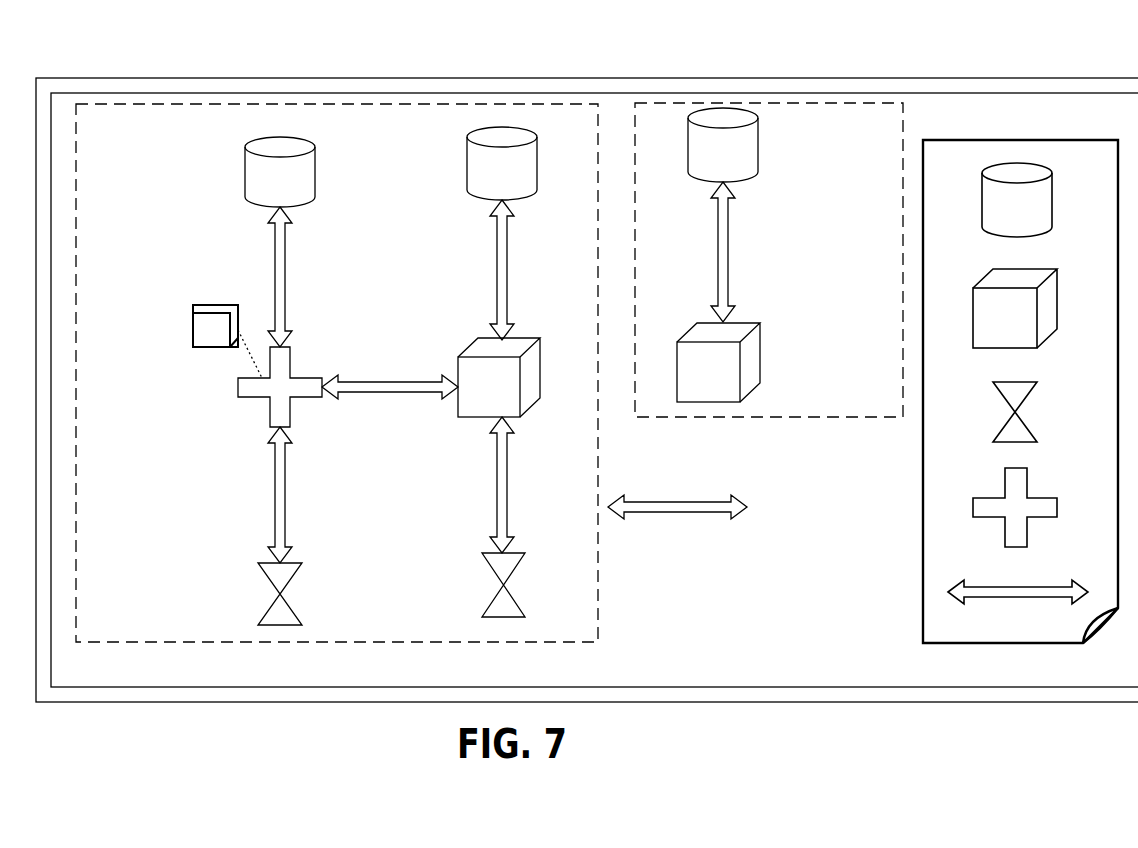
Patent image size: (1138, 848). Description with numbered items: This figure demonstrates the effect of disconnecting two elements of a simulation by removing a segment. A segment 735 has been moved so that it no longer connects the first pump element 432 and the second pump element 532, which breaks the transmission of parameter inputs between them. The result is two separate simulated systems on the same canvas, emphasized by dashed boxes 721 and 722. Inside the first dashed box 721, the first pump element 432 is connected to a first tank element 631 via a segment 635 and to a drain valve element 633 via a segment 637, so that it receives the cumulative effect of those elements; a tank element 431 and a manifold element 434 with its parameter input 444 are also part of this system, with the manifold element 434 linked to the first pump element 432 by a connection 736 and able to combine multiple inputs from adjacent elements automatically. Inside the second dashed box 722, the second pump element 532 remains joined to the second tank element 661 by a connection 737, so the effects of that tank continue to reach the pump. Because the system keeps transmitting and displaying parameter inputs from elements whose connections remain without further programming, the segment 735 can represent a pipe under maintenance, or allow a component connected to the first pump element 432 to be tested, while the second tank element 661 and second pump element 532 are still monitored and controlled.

The dashed box 721 is at (366, 104).
The dashed box 722 is at (797, 104).
The tank element 431 is at (245, 178).
The first tank element 631 is at (467, 170).
The second tank element 661 is at (760, 150).
The parameter input 444 is at (223, 305).
The manifold element 434 is at (238, 388).
The first pump element 432 is at (528, 338).
The second pump element 532 is at (760, 353).
The segment 635 is at (487, 275).
The segment 637 is at (482, 478).
The communication link 736 is at (400, 360).
The communication link 737 is at (730, 255).
The segment 735 is at (683, 517).
The drain valve element 633 is at (500, 585).